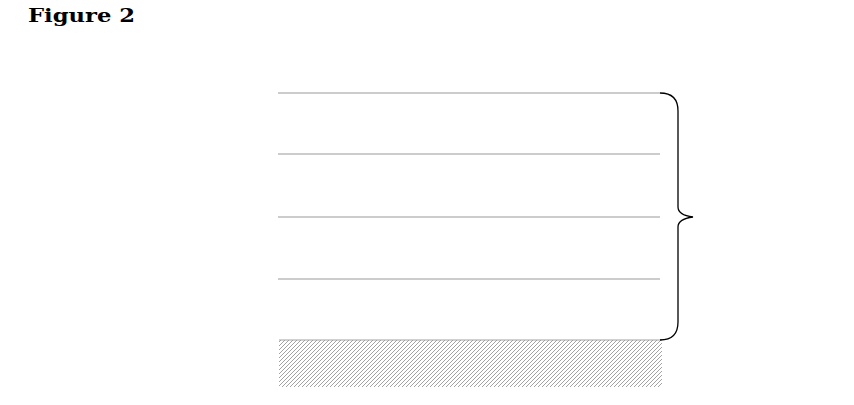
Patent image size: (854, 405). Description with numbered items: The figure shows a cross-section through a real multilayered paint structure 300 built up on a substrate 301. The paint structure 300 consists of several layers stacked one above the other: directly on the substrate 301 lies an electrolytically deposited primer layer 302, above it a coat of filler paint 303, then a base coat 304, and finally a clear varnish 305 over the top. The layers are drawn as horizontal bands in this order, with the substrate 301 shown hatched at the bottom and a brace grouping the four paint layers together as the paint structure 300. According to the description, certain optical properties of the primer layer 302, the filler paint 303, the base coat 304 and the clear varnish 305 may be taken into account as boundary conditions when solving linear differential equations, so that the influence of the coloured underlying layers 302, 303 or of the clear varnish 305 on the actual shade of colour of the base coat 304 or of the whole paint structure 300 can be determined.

The multilayered paint structure 300 is at (700, 216).
The substrate 301 is at (303, 348).
The electrolytically deposited primer layer 302 is at (303, 302).
The coat of filler paint 303 is at (303, 241).
The base coat 304 is at (303, 178).
The clear varnish 305 is at (303, 124).